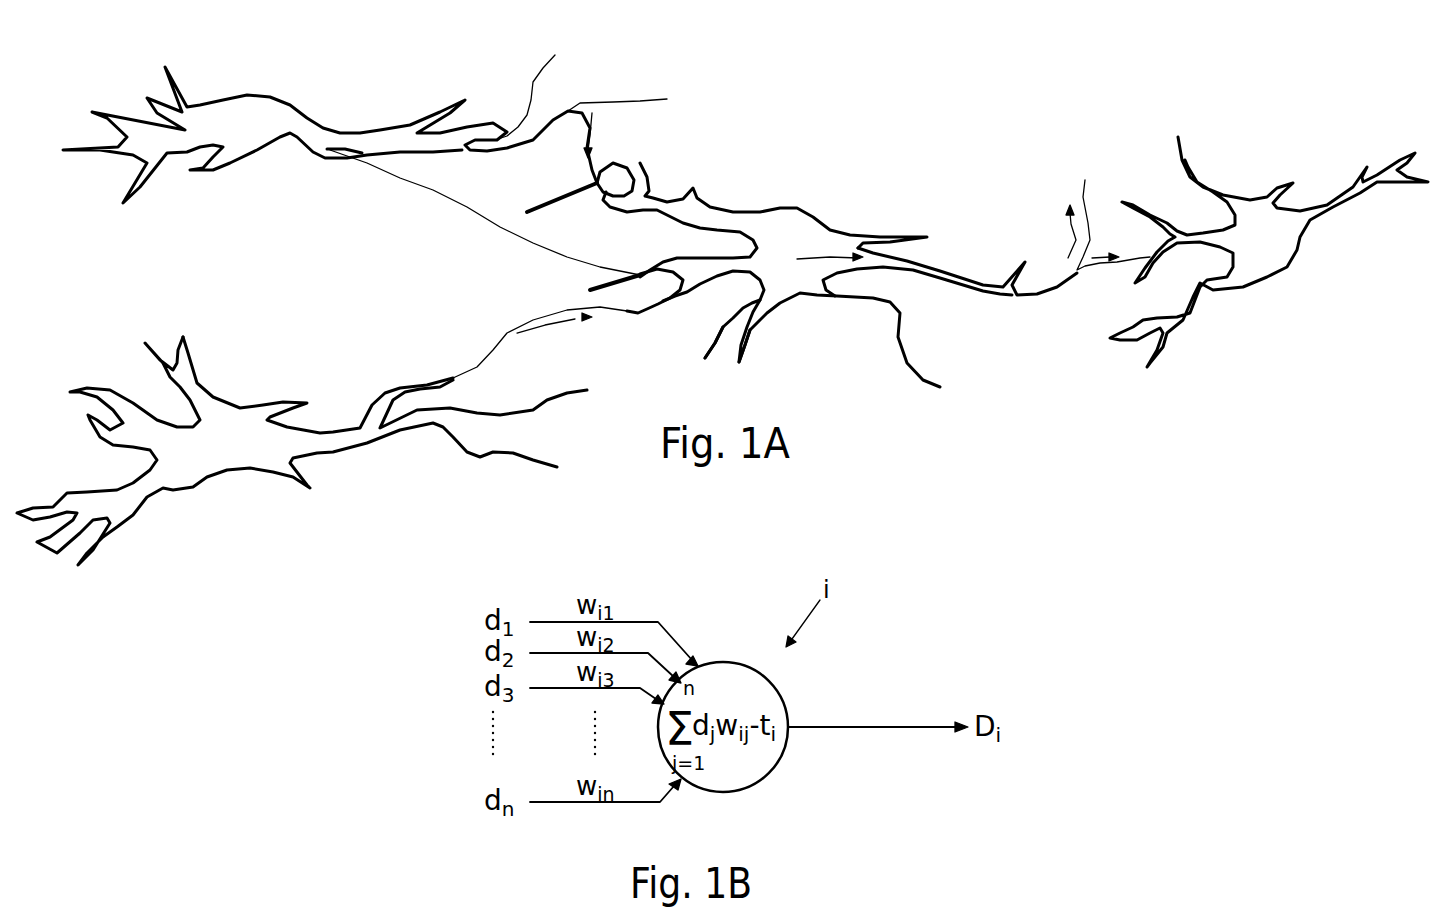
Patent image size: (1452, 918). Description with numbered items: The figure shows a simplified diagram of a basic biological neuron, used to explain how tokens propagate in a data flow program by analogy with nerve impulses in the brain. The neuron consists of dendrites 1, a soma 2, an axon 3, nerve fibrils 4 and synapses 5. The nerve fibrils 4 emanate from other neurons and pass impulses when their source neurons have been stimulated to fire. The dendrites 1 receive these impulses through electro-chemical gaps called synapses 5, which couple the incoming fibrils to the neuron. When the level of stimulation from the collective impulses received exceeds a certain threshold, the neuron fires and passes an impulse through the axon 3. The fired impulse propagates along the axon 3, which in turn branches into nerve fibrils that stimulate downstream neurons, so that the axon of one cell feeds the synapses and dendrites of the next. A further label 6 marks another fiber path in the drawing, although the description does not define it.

The dendrites 1 is at (646, 160).
The soma 2 is at (812, 196).
The axon 3 is at (937, 292).
The nerve fibrils 4 is at (500, 237).
The synapses 5 is at (637, 257).
The axon of another neuron 6 is at (1075, 293).